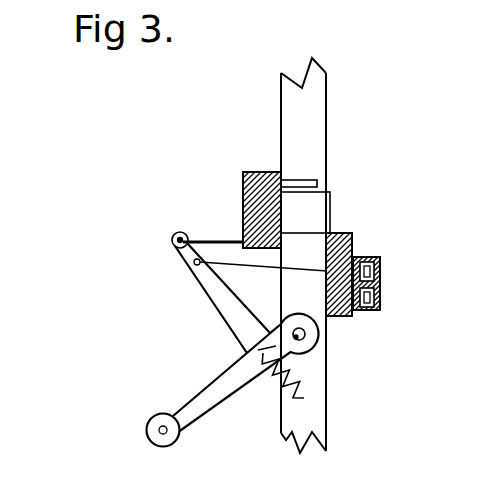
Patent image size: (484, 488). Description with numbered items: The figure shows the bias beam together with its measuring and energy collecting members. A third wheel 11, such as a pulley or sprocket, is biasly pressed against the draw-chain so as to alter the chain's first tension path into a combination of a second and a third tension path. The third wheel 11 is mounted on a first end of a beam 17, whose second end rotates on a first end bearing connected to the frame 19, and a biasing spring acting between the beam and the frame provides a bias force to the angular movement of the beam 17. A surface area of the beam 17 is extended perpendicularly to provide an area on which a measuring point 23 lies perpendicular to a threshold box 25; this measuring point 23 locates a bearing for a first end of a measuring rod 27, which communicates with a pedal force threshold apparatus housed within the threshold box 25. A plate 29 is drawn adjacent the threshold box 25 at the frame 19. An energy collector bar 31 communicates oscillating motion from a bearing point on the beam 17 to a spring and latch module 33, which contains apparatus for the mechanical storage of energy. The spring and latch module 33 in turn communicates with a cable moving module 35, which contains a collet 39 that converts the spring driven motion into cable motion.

The third wheel 11 is at (136, 438).
The beam 17 is at (216, 363).
The frame 19 is at (410, 132).
The measuring point 23 is at (177, 266).
The threshold box 25 is at (232, 179).
The measuring rod 27 is at (199, 231).
The plate 29 is at (293, 174).
The collector bar 31 is at (259, 258).
The spring and latch module 33 is at (422, 233).
The cable moving module 35 is at (361, 324).
The collet 39 is at (427, 290).